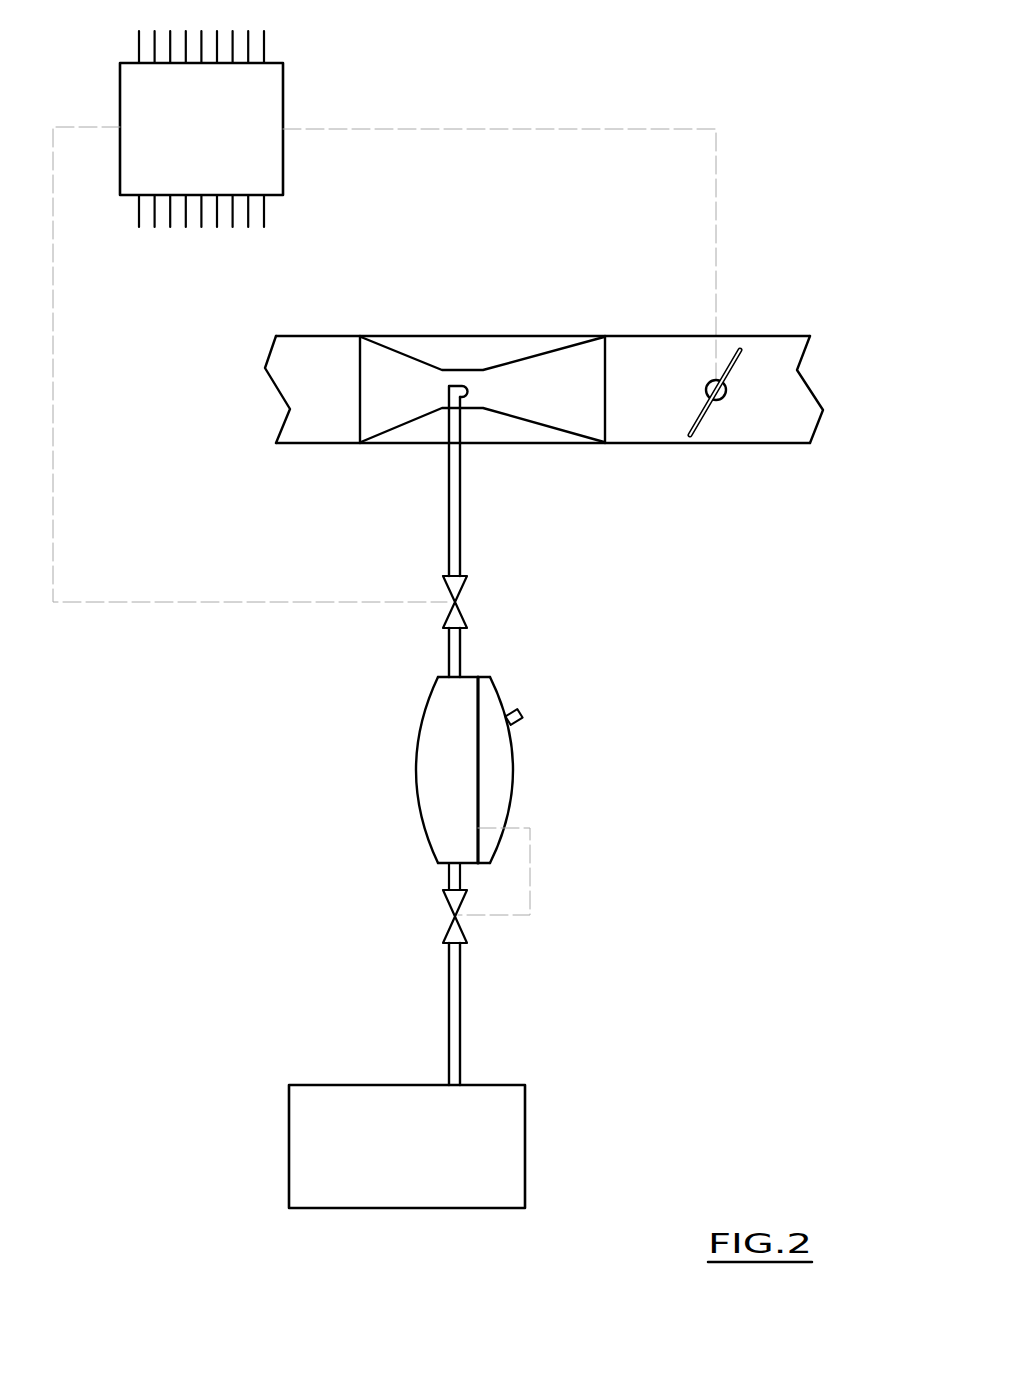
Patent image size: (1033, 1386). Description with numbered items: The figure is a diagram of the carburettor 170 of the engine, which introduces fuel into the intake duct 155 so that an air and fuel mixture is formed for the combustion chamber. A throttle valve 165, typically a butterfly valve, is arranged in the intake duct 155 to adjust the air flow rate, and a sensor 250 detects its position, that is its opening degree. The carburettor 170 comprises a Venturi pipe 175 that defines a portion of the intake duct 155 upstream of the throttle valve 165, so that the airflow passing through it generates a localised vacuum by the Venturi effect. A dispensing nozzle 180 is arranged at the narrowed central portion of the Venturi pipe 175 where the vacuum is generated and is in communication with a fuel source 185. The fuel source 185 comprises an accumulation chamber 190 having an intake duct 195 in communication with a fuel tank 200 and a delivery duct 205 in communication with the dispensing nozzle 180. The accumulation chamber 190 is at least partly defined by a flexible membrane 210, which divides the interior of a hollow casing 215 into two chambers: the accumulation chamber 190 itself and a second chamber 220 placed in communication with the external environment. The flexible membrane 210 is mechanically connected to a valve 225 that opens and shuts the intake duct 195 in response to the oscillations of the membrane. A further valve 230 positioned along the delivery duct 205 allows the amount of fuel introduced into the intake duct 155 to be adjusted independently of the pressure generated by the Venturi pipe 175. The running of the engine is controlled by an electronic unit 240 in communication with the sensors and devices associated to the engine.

The intake duct 155 is at (783, 347).
The throttle valve 165 is at (774, 458).
The carburettor 170 is at (487, 313).
The Venturi pipe 175 is at (437, 345).
The dispensing nozzle 180 is at (462, 384).
The fuel source 185 is at (494, 746).
The accumulation chamber 190 is at (480, 767).
The intake duct 195 is at (457, 1003).
The fuel tank 200 is at (360, 1183).
The delivery duct 205 is at (453, 515).
The flexible membrane 210 is at (480, 787).
The hollow casing 215 is at (420, 727).
The second chamber 220 is at (488, 717).
The valve 225 is at (448, 903).
The valve 230 is at (456, 614).
The electronic unit 240 is at (138, 100).
The sensor 250 is at (726, 400).